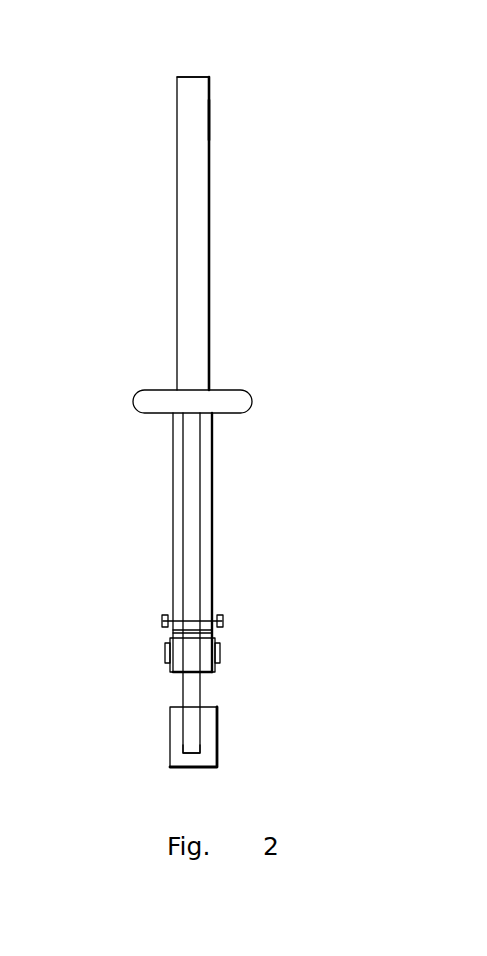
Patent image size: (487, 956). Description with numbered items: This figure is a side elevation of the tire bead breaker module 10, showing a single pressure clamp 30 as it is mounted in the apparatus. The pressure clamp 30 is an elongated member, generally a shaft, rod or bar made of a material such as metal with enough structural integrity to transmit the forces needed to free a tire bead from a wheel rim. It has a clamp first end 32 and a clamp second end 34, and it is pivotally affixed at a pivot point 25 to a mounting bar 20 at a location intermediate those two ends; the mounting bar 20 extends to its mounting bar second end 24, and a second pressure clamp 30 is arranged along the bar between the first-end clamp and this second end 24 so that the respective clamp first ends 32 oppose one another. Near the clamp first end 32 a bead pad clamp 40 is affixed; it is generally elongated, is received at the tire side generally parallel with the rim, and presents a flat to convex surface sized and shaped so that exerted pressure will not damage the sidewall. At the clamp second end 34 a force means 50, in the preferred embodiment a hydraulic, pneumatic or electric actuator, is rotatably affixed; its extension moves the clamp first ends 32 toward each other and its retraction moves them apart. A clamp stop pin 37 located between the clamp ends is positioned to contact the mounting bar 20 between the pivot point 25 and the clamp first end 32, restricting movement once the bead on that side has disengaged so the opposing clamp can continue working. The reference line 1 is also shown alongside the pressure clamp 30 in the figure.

The shaft surface 1 is at (223, 118).
The tire bead breaker module 10 is at (358, 352).
The mounting bar 20 is at (190, 287).
The mounting bar second end 24 is at (193, 85).
The pivot point 25 is at (221, 652).
The pressure clamp 30 is at (192, 488).
The clamp first end 32 is at (183, 422).
The clamp second end 34 is at (190, 745).
The clamp stop pin 37 is at (224, 620).
The bead pad clamp 40 is at (243, 402).
The force means 50 is at (216, 730).